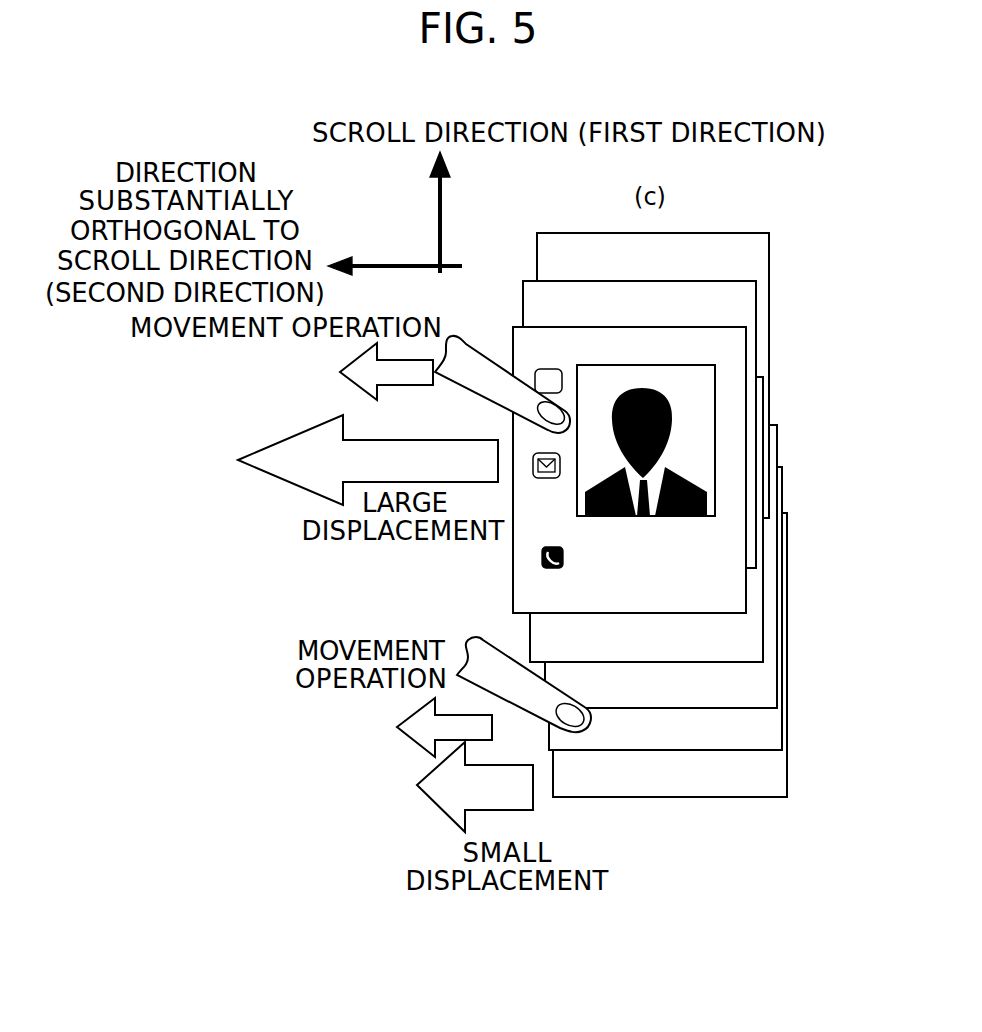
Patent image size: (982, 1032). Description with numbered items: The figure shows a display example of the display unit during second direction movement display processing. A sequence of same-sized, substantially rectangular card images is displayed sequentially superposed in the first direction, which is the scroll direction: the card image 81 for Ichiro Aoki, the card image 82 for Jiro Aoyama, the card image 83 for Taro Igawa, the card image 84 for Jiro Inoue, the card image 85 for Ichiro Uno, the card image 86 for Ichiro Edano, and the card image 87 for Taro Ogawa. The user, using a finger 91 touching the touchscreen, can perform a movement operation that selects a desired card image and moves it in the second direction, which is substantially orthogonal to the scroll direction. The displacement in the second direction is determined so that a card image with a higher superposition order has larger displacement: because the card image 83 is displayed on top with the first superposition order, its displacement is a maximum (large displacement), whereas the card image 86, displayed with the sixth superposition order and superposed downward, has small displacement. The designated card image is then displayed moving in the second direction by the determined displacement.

The card image 81 is at (753, 265).
The card image 82 is at (744, 312).
The card image 83 is at (735, 355).
The card image 84 is at (753, 638).
The card image 85 is at (753, 697).
The card image 86 is at (753, 742).
The card image 87 is at (753, 783).
The finger 91 is at (482, 367).